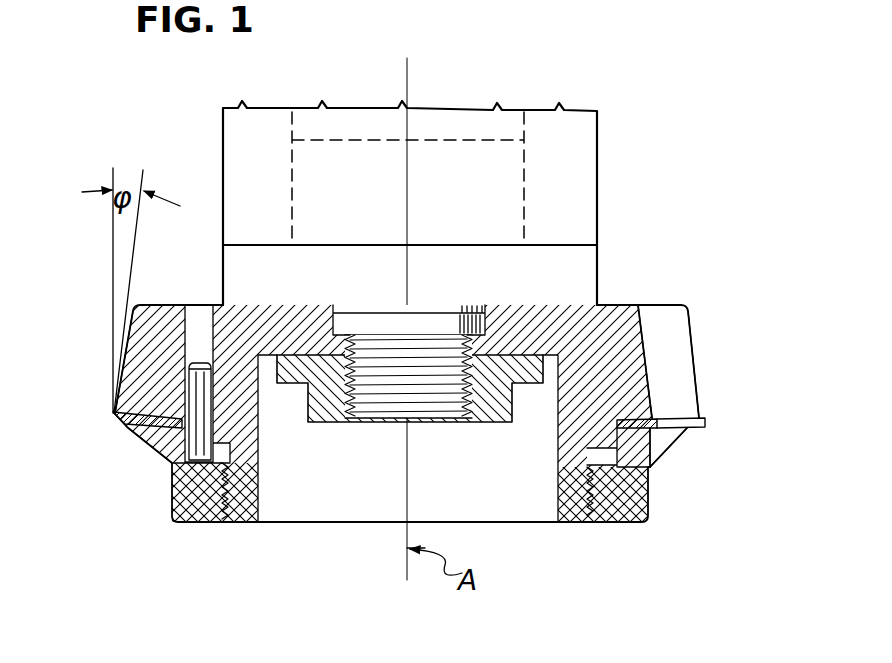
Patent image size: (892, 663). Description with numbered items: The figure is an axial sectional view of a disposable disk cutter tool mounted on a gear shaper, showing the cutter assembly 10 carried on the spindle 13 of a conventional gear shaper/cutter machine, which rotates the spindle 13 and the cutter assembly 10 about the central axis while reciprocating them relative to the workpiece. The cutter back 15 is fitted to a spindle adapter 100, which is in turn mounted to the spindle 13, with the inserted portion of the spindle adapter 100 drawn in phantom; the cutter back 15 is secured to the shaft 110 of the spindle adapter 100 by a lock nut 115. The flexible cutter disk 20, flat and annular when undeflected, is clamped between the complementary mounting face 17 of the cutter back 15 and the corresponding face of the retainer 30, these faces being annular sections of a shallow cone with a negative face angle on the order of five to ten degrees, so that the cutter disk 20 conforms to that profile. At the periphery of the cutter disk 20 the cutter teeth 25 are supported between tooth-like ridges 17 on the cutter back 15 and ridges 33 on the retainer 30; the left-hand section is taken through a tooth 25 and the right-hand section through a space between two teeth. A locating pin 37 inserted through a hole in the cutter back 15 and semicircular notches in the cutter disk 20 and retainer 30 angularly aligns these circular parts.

The cutter assembly 10 is at (597, 532).
The spindle 13 is at (622, 112).
The cutter back 15 is at (128, 343).
The mounting face 17 is at (683, 343).
The cutter disk 20 is at (114, 413).
The cutter teeth 25 is at (680, 410).
The retainer 30 is at (157, 437).
The tooth-like ridges 33 is at (665, 431).
The locating pin 37 is at (197, 432).
The spindle adapter 100 is at (524, 177).
The shaft 110 is at (388, 400).
The lock nut 115 is at (488, 400).